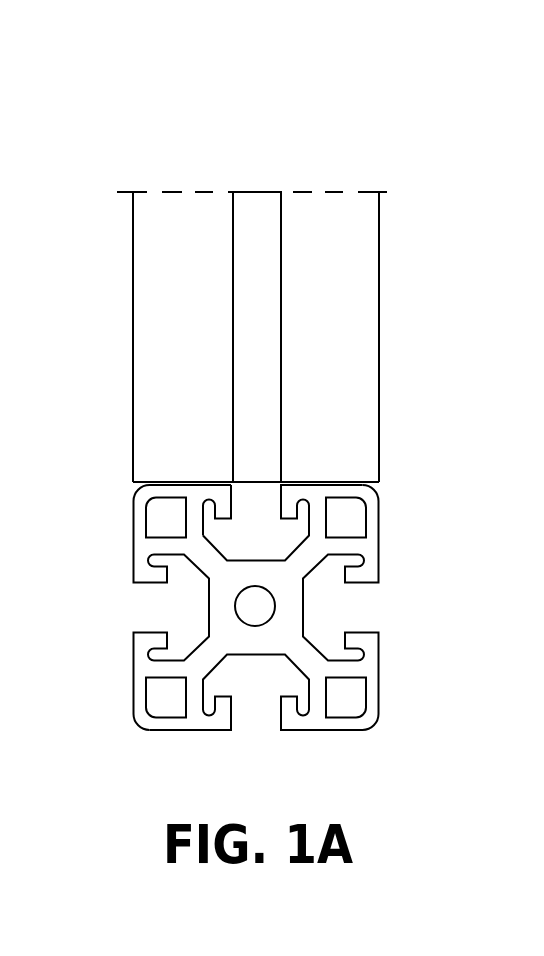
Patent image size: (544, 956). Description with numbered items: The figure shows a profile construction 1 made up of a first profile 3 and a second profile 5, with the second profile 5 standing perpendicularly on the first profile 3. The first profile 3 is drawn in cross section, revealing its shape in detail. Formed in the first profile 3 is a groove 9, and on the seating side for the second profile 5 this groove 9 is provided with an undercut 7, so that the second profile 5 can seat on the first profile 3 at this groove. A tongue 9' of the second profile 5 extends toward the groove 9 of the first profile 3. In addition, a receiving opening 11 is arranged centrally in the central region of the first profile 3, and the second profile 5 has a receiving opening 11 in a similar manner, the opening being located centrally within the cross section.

The profile construction 1 is at (442, 145).
The first profile 3 is at (380, 530).
The second profile 5 is at (353, 315).
The undercut 7 is at (227, 504).
The groove 9 is at (212, 499).
The tongue 9' is at (257, 287).
The receiving opening 11 is at (257, 605).